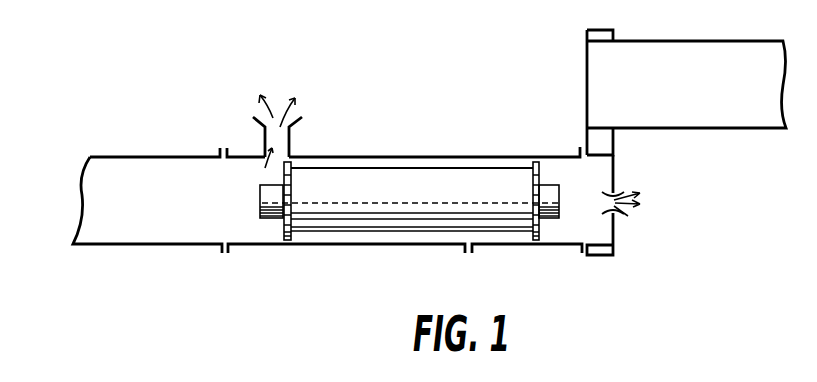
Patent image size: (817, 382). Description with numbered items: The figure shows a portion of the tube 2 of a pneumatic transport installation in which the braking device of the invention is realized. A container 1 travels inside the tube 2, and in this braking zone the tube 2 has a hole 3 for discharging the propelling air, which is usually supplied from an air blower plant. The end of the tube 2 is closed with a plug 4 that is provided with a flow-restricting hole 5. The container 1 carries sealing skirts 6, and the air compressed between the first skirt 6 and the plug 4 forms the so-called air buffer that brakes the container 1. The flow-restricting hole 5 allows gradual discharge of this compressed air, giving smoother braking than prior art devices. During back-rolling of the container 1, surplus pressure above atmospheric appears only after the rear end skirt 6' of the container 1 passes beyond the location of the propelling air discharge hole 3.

The container 1 is at (402, 240).
The tube 2 is at (142, 232).
The hole 3 is at (275, 146).
The plug 4 is at (613, 237).
The flow-restricting hole 5 is at (628, 216).
The sealing skirt 6 is at (544, 233).
The rear end skirt 6' is at (273, 231).